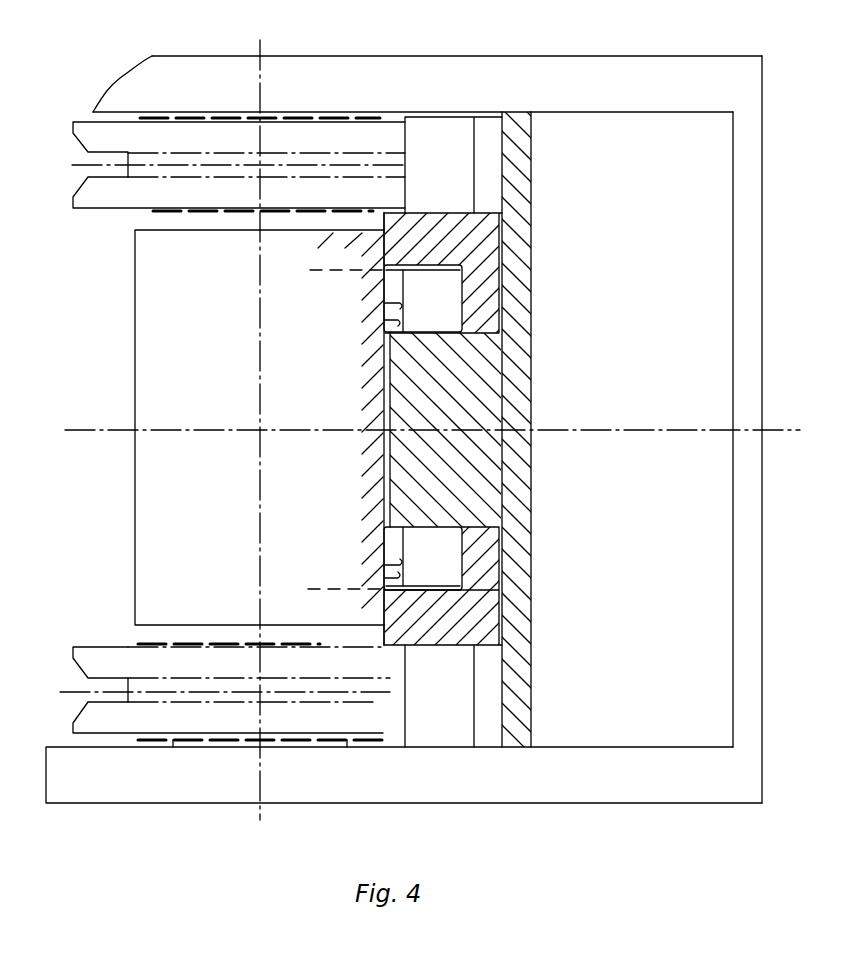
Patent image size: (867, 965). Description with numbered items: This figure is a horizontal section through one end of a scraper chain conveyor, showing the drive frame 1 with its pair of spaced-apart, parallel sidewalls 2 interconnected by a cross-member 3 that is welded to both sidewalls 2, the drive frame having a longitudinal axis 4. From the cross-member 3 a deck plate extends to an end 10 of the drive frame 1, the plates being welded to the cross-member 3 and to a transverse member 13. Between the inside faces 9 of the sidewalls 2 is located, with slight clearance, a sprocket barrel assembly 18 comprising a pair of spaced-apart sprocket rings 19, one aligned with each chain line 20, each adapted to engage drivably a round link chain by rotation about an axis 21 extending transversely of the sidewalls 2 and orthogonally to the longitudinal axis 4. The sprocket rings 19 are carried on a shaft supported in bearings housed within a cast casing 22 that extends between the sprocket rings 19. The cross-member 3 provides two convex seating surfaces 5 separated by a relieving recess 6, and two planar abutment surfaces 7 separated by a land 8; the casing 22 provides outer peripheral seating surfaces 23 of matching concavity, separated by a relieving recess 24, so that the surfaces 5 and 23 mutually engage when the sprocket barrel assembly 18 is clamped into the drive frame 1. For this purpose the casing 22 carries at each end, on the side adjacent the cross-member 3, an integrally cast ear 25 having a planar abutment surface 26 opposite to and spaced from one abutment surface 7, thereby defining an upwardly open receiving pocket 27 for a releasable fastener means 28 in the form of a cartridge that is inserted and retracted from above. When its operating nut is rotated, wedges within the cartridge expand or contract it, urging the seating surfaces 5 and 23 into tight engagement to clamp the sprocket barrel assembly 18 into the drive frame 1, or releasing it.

The drive frame 1 is at (562, 50).
The sidewalls 2 is at (392, 70).
The cross-member 3 is at (526, 371).
The longitudinal axis 4 is at (623, 430).
The convex seating surfaces 5 is at (387, 270).
The relieving recess 6 is at (383, 456).
The planar abutment surfaces 7 is at (402, 309).
The land 8 is at (406, 402).
The inside faces 9 is at (176, 126).
The end of the drive frame 10 is at (763, 310).
The transverse member 13 is at (748, 410).
The sprocket barrel assembly 18 is at (148, 388).
The sprocket rings 19 is at (93, 195).
The chain lines 20 is at (93, 153).
The axis 21 is at (260, 335).
The cast casing 22 is at (188, 477).
The seating surfaces 23 is at (390, 319).
The relieving recess 24 is at (388, 388).
The ear 25 is at (487, 226).
The planar abutment surface 26 is at (464, 284).
The receiving pocket 27 is at (438, 265).
The releasable fastener means 28 is at (445, 316).